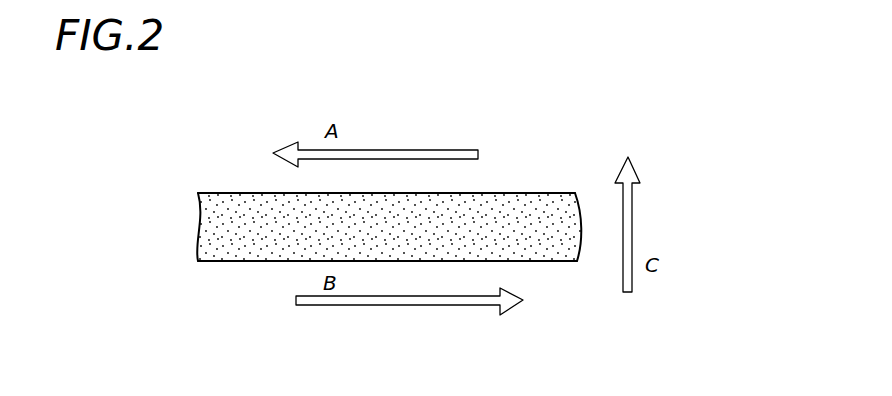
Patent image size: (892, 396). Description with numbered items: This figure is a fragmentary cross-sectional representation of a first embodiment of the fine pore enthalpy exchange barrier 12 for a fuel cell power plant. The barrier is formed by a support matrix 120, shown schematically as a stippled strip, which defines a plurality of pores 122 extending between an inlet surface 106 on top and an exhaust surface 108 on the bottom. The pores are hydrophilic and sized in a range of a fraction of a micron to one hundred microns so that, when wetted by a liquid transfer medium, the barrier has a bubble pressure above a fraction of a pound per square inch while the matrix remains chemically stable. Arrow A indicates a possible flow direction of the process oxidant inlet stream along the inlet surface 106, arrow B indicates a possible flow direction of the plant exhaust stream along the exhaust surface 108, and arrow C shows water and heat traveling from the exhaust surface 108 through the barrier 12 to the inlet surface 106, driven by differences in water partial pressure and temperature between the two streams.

The fine pore enthalpy exchange barrier 12 is at (545, 140).
The inlet surface 106 is at (458, 193).
The exhaust surface 108 is at (547, 262).
The support matrix 120 is at (260, 210).
The pores 122 is at (266, 249).